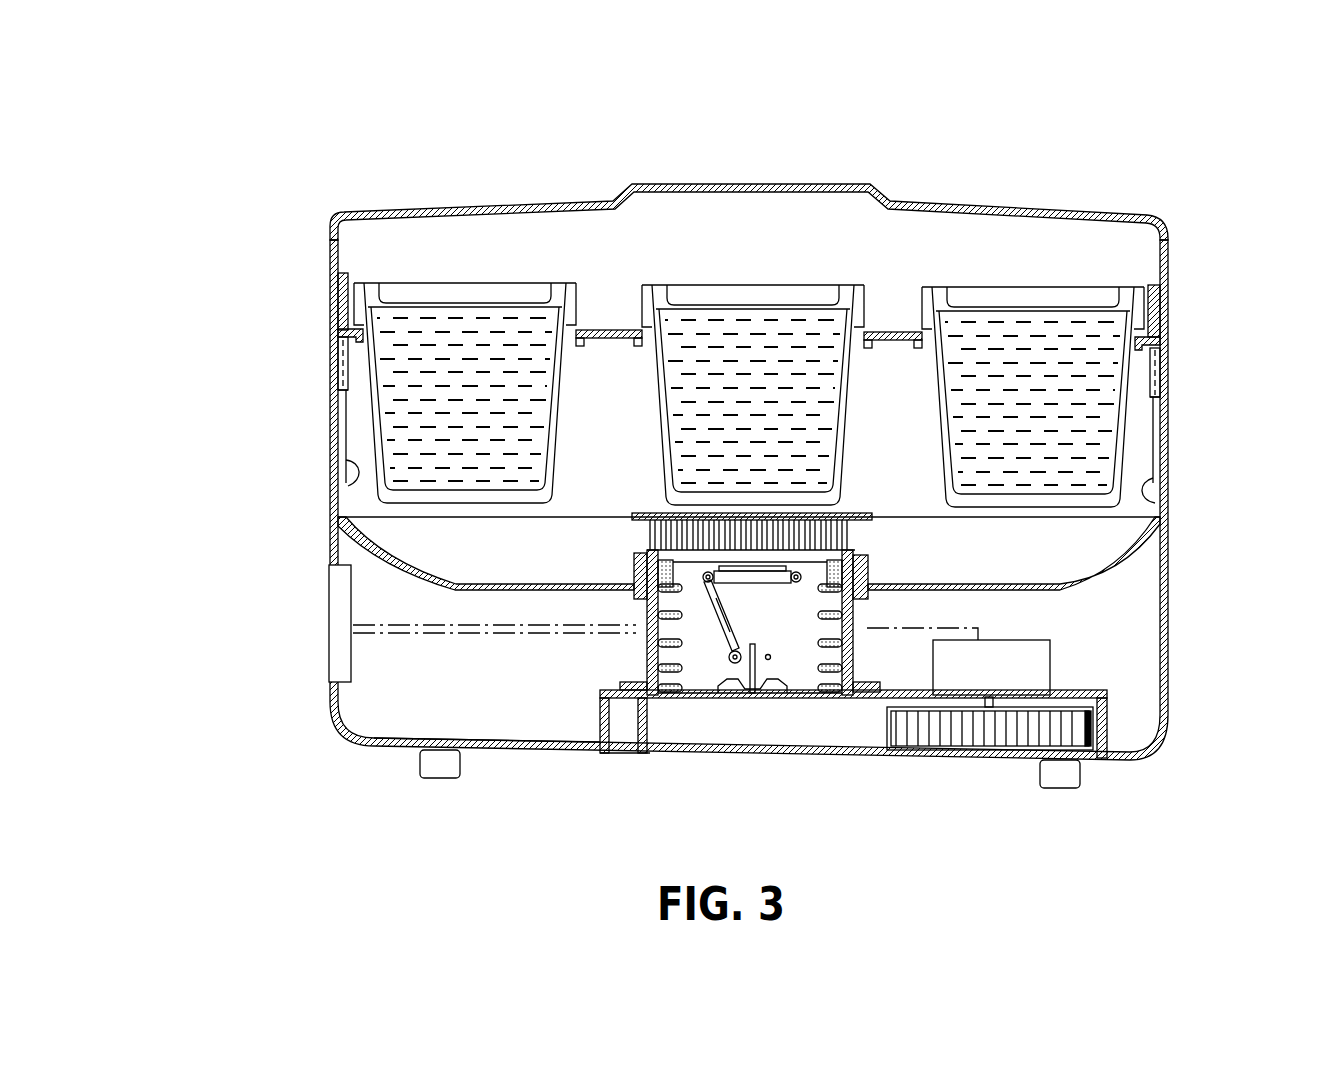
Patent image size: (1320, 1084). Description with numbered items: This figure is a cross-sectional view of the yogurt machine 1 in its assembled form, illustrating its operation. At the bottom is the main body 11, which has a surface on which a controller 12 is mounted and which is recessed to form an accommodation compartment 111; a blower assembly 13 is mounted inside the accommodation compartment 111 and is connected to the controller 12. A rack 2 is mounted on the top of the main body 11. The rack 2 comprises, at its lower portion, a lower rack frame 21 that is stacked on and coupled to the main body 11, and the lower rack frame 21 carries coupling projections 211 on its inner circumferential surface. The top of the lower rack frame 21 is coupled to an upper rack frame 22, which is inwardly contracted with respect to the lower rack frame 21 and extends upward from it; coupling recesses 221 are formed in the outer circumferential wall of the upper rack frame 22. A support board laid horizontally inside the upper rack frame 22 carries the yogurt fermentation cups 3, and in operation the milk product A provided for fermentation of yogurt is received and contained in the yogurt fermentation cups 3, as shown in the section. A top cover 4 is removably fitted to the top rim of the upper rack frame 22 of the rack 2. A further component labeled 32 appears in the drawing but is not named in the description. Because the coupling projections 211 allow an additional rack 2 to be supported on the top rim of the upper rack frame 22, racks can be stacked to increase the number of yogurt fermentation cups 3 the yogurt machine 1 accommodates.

The yogurt machine 1 is at (326, 197).
The main body 11 is at (324, 558).
The accommodation compartment 111 is at (392, 703).
The controller 12 is at (340, 633).
The blower assembly 13 is at (1040, 670).
The rack 2 is at (325, 462).
The lower rack frame 21 is at (340, 425).
The coupling projections 211 is at (345, 483).
The upper rack frame 22 is at (345, 367).
The coupling recesses 221 is at (345, 298).
The yogurt fermentation cups 3 is at (777, 287).
The connecting plate 32 is at (600, 320).
The top cover 4 is at (466, 203).
The milk product A is at (447, 317).